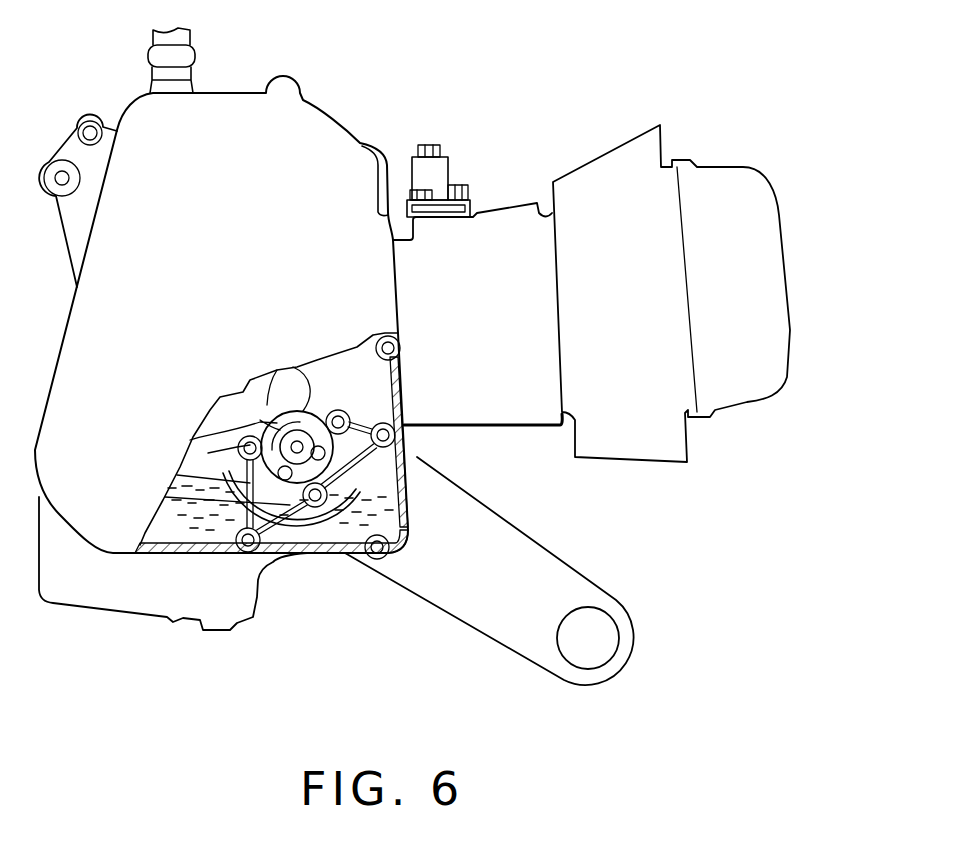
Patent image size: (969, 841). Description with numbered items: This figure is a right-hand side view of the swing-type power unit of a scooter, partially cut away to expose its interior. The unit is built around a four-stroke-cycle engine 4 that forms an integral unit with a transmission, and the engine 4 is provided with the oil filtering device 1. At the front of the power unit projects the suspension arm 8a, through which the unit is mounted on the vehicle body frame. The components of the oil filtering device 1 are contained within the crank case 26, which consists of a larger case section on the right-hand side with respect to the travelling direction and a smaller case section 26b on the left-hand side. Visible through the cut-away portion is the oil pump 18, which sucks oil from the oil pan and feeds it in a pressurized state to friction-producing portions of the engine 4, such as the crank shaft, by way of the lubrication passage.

The oil filtering device 1 is at (355, 182).
The four-stroke-cycle engine 4 is at (665, 125).
The oil pump 18 is at (335, 478).
The crank case 26 is at (312, 102).
The smaller case section 26b is at (345, 555).
The suspension arm 8a is at (628, 606).